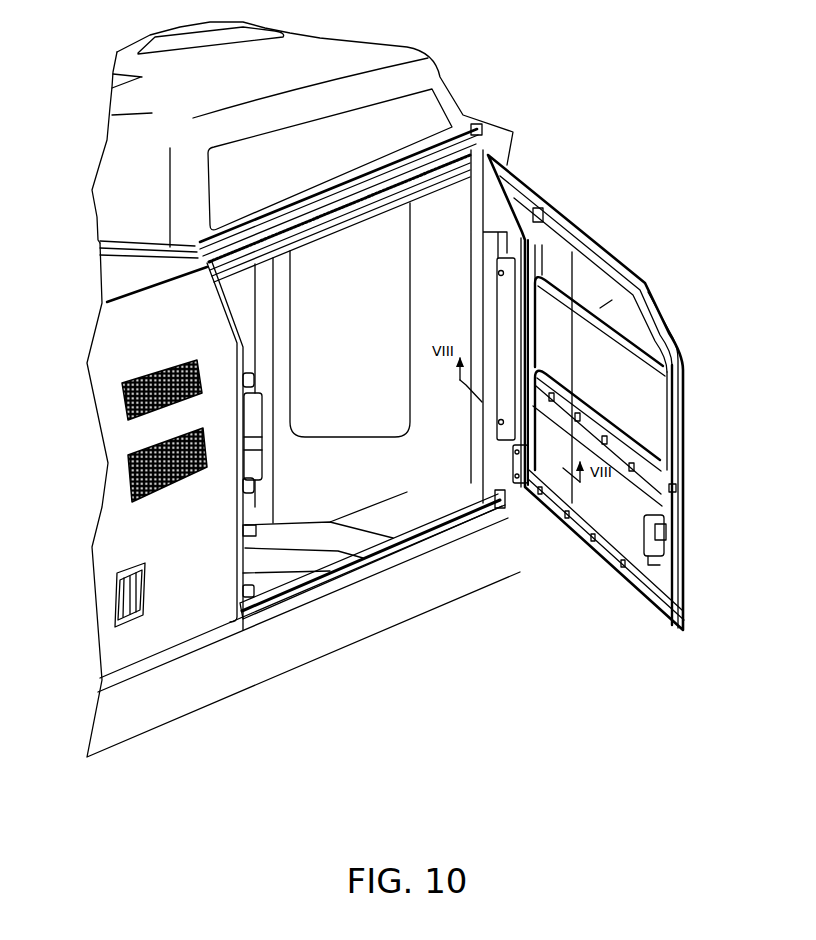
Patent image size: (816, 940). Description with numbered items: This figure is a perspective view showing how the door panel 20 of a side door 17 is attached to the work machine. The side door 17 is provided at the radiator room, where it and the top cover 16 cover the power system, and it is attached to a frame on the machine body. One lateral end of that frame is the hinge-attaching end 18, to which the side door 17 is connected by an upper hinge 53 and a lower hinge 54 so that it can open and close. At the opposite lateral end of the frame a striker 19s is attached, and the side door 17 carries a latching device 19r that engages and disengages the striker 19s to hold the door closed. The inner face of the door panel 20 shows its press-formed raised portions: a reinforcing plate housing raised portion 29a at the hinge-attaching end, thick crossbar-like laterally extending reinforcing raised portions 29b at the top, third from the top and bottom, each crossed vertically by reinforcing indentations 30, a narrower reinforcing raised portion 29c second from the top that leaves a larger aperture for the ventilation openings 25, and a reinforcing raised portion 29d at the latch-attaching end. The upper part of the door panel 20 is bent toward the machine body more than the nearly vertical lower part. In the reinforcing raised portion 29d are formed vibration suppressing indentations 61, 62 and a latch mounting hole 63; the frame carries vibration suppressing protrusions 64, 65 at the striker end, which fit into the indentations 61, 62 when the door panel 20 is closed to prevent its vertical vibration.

The top cover 16 is at (390, 50).
The side door 17 is at (566, 215).
The hinge-attaching end 18 is at (486, 209).
The door panel 20 is at (652, 294).
The hinge 53 is at (524, 212).
The reinforcing plate housing raised portion 29a is at (541, 247).
The reinforcing raised portion 29b is at (607, 255).
The reinforcing indentation 30 is at (632, 280).
The ventilation opening 25 is at (612, 387).
The reinforcing raised portion 29c is at (676, 356).
The vibration suppressing indentation 61 is at (673, 381).
The reinforcing raised portion 29d is at (683, 407).
The vibration suppressing indentation 62 is at (676, 488).
The latching device 19r is at (659, 540).
The latch mounting hole 63 is at (660, 588).
The hinge 54 is at (523, 455).
The vibration suppressing protrusion 64 is at (247, 383).
The vibration suppressing protrusion 65 is at (247, 486).
The striker 19s is at (247, 530).